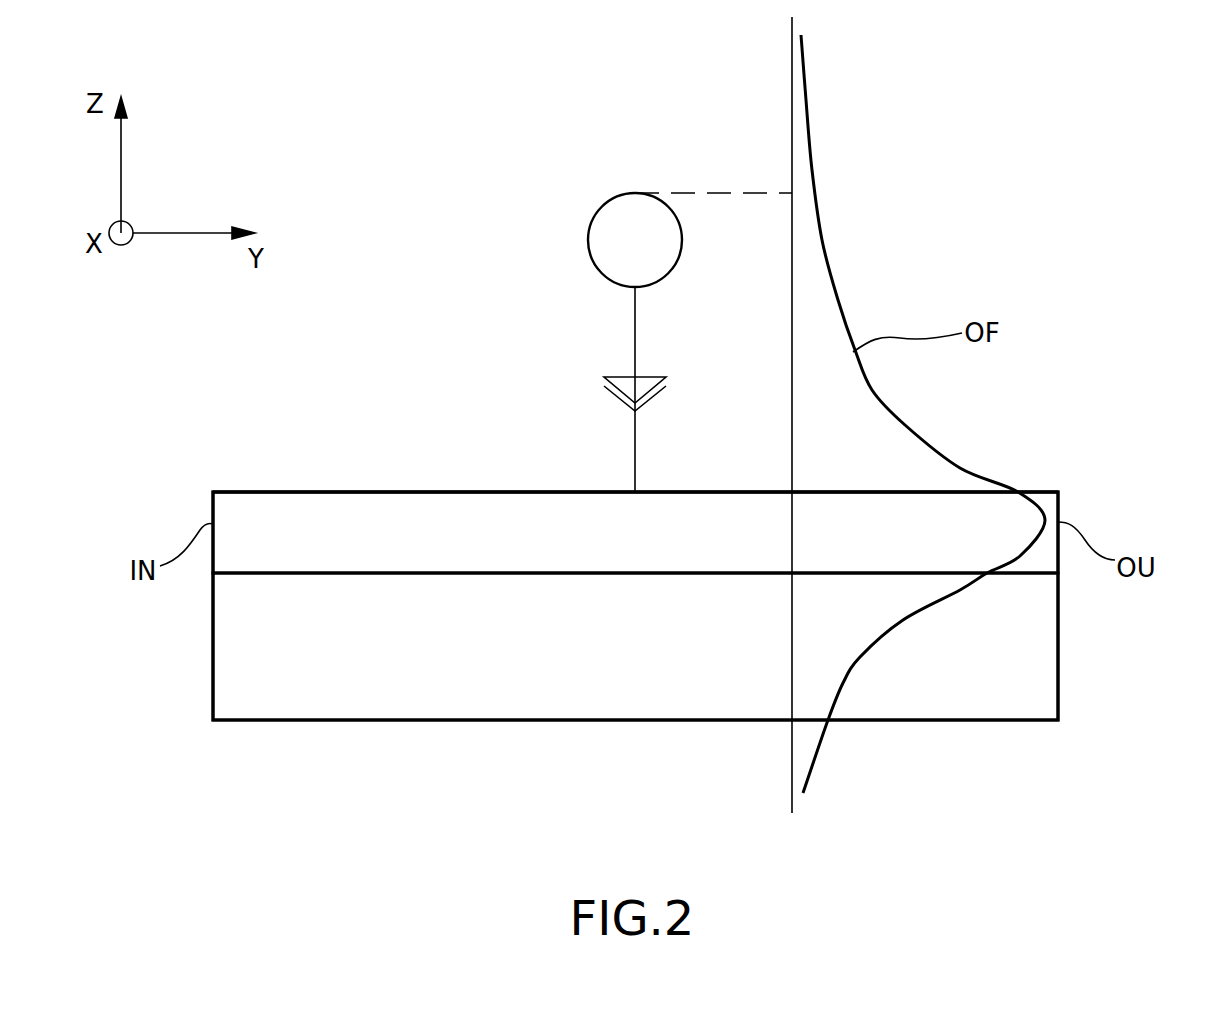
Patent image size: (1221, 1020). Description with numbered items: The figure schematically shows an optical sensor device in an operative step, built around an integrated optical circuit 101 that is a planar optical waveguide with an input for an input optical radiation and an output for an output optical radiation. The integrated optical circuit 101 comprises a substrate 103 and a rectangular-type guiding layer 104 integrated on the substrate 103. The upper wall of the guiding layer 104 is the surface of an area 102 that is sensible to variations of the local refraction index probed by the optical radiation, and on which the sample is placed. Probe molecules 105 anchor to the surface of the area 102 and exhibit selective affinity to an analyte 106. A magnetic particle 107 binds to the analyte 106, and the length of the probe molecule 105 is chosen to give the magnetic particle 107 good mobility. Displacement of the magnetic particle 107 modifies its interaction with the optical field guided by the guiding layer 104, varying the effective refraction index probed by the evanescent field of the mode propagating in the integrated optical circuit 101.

The integrated optical circuit 101 is at (175, 460).
The area sensible to variations of a local refraction index 102 is at (420, 470).
The substrate 103 is at (613, 664).
The guiding layer 104 is at (613, 549).
The probe molecules 105 is at (634, 466).
The analyte 106 is at (626, 376).
The magnetic particles 107 is at (618, 232).